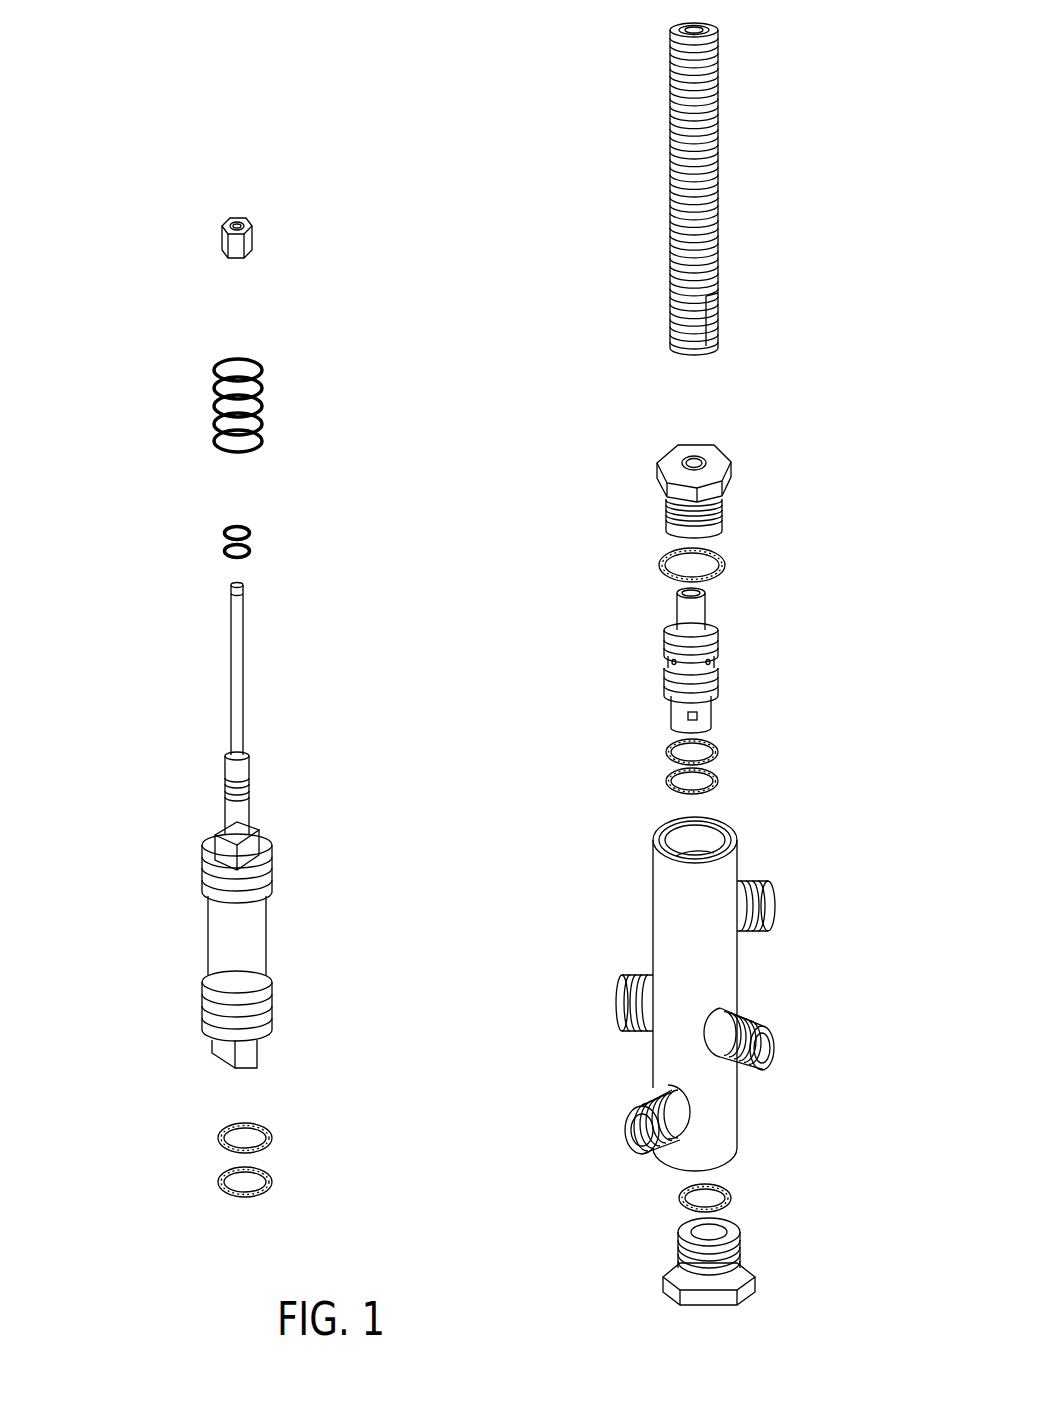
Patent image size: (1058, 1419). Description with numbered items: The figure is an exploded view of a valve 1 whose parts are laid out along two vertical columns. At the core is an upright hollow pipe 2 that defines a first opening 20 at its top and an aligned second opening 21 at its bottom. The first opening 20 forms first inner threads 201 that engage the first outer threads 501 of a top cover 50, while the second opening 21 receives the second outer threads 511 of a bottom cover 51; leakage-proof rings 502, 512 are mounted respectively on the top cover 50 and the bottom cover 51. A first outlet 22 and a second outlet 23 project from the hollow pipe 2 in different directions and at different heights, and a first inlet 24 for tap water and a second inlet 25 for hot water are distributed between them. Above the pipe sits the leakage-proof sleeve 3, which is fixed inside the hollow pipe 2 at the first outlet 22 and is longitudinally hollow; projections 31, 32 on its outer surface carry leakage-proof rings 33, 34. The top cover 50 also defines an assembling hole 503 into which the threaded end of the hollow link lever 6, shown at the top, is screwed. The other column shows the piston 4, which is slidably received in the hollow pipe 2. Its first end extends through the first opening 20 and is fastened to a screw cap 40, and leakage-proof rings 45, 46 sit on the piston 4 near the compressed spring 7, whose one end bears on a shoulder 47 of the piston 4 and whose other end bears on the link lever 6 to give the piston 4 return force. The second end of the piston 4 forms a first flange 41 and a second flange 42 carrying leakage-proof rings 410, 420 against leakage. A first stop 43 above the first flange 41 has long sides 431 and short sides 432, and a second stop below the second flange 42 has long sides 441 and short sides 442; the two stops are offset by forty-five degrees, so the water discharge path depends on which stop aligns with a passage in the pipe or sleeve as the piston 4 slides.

The valve 1 is at (408, 38).
The link lever 6 is at (724, 127).
The screw cap 40 is at (253, 232).
The compressed spring 7 is at (207, 403).
The leakage-proof ring 45 is at (223, 533).
The leakage-proof ring 46 is at (225, 551).
The hollow pipe 2 is at (245, 589).
The shoulder 47 is at (228, 757).
The piston 4 is at (186, 882).
The first stop 43 is at (410, 783).
The short sides 432 is at (257, 812).
The long sides 431 is at (263, 830).
The first flange 41 is at (273, 852).
The second flange 42 is at (267, 987).
The short sides 442 is at (245, 1056).
The long sides 441 is at (225, 1052).
The leakage-proof ring 410 is at (219, 1140).
The leakage-proof ring 420 is at (219, 1183).
The top cover 50 is at (655, 456).
The assembling hole 503 is at (700, 455).
The first outer threads 501 is at (666, 500).
The leakage-proof ring 502 is at (723, 557).
The leakage-proof sleeve 3 is at (545, 658).
The projection 31 is at (672, 622).
The projection 32 is at (667, 668).
The leakage-proof ring 33 is at (668, 750).
The leakage-proof ring 34 is at (668, 782).
The first opening 20 is at (718, 835).
The first inner threads 201 is at (668, 826).
The first outlet 22 is at (773, 905).
The second inlet 25 is at (630, 986).
The first inlet 24 is at (757, 1047).
The second outlet 23 is at (634, 1108).
The second opening 21 is at (737, 1150).
The leakage-proof ring 512 is at (678, 1198).
The second outer threads 511 is at (678, 1265).
The bottom cover 51 is at (668, 1292).